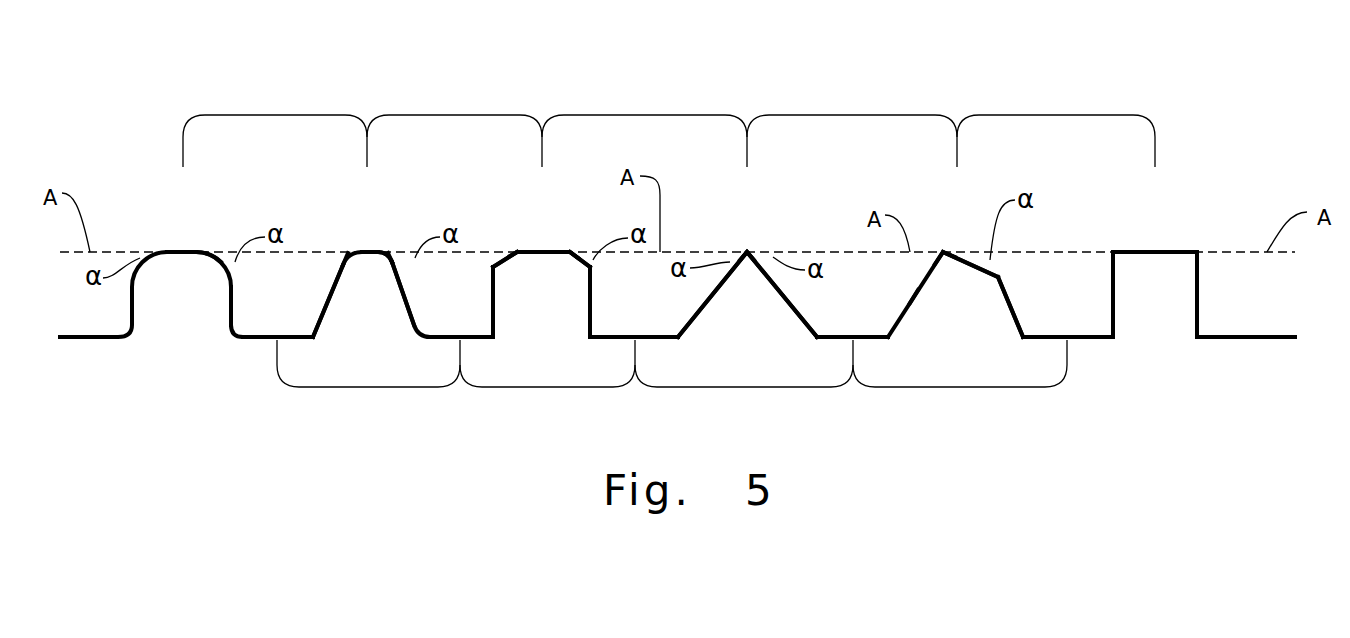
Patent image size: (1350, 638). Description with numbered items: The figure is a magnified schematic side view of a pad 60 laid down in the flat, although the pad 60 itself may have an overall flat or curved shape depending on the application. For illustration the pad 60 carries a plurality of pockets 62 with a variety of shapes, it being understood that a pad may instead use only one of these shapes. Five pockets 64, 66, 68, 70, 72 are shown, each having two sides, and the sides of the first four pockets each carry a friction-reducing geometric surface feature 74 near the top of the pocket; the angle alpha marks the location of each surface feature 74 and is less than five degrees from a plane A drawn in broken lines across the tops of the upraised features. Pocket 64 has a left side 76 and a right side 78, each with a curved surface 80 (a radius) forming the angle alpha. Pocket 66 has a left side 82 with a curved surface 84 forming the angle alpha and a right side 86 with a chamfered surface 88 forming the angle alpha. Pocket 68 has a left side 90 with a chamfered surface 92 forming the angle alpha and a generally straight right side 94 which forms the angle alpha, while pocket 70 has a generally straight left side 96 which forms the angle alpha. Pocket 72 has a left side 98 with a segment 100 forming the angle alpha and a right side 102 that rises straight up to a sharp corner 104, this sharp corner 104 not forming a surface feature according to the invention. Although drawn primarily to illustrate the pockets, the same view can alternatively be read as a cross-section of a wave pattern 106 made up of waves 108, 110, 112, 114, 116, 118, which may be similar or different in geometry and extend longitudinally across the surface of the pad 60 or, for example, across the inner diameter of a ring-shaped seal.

The pad 60 is at (777, 93).
The pockets 62 is at (672, 385).
The pocket 64 is at (257, 338).
The pocket 66 is at (480, 338).
The pocket 68 is at (667, 338).
The pocket 70 is at (880, 338).
The pocket 72 is at (1100, 338).
The friction-reducing geometric surface feature 74 is at (218, 258).
The left side 76 is at (233, 305).
The right side 78 is at (323, 302).
The curved surface 80 is at (172, 250).
The left side 82 is at (410, 293).
The curved surface 84 is at (385, 260).
The right side 86 is at (490, 300).
The chamfered surface 88 is at (497, 267).
The left side 90 is at (590, 307).
The chamfered surface 92 is at (583, 267).
The right side 94 is at (693, 310).
The left side 96 is at (800, 313).
The left side 98 is at (1015, 303).
The segment 100 is at (998, 277).
The right side 102 is at (1113, 283).
The sharp corner 104 is at (1113, 252).
The wave pattern 106 is at (669, 126).
The wave 108 is at (178, 248).
The wave 110 is at (373, 245).
The wave 112 is at (537, 245).
The wave 114 is at (743, 250).
The wave 116 is at (940, 247).
The wave 118 is at (1145, 247).